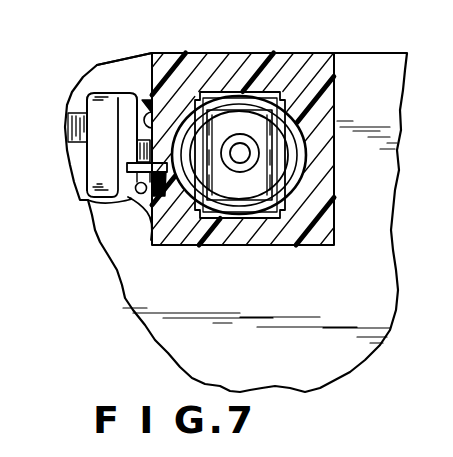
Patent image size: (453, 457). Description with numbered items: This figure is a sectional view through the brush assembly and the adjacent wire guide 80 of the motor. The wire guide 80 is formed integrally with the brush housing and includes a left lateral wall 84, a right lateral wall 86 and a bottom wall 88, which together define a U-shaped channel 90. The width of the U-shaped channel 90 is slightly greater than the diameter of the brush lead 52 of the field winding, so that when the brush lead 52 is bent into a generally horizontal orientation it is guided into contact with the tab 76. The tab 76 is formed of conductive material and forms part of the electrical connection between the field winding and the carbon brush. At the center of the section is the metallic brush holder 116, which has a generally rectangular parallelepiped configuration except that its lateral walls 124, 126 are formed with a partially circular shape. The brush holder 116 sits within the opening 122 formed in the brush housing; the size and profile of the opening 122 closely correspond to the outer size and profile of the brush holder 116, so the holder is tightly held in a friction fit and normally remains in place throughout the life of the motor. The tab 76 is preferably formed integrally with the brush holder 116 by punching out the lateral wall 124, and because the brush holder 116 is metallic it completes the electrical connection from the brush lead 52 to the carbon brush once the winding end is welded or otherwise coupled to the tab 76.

The brush lead 52 is at (133, 148).
The tab 76 is at (127, 172).
The wire guide 80 is at (78, 98).
The left lateral wall 84 is at (118, 76).
The right lateral wall 86 is at (152, 137).
The bottom wall 88 is at (128, 185).
The U-shaped channel 90 is at (142, 80).
The metallic brush holder 116 is at (233, 90).
The opening 122 is at (280, 120).
The lateral wall 124 is at (280, 190).
The lateral wall 126 is at (205, 196).